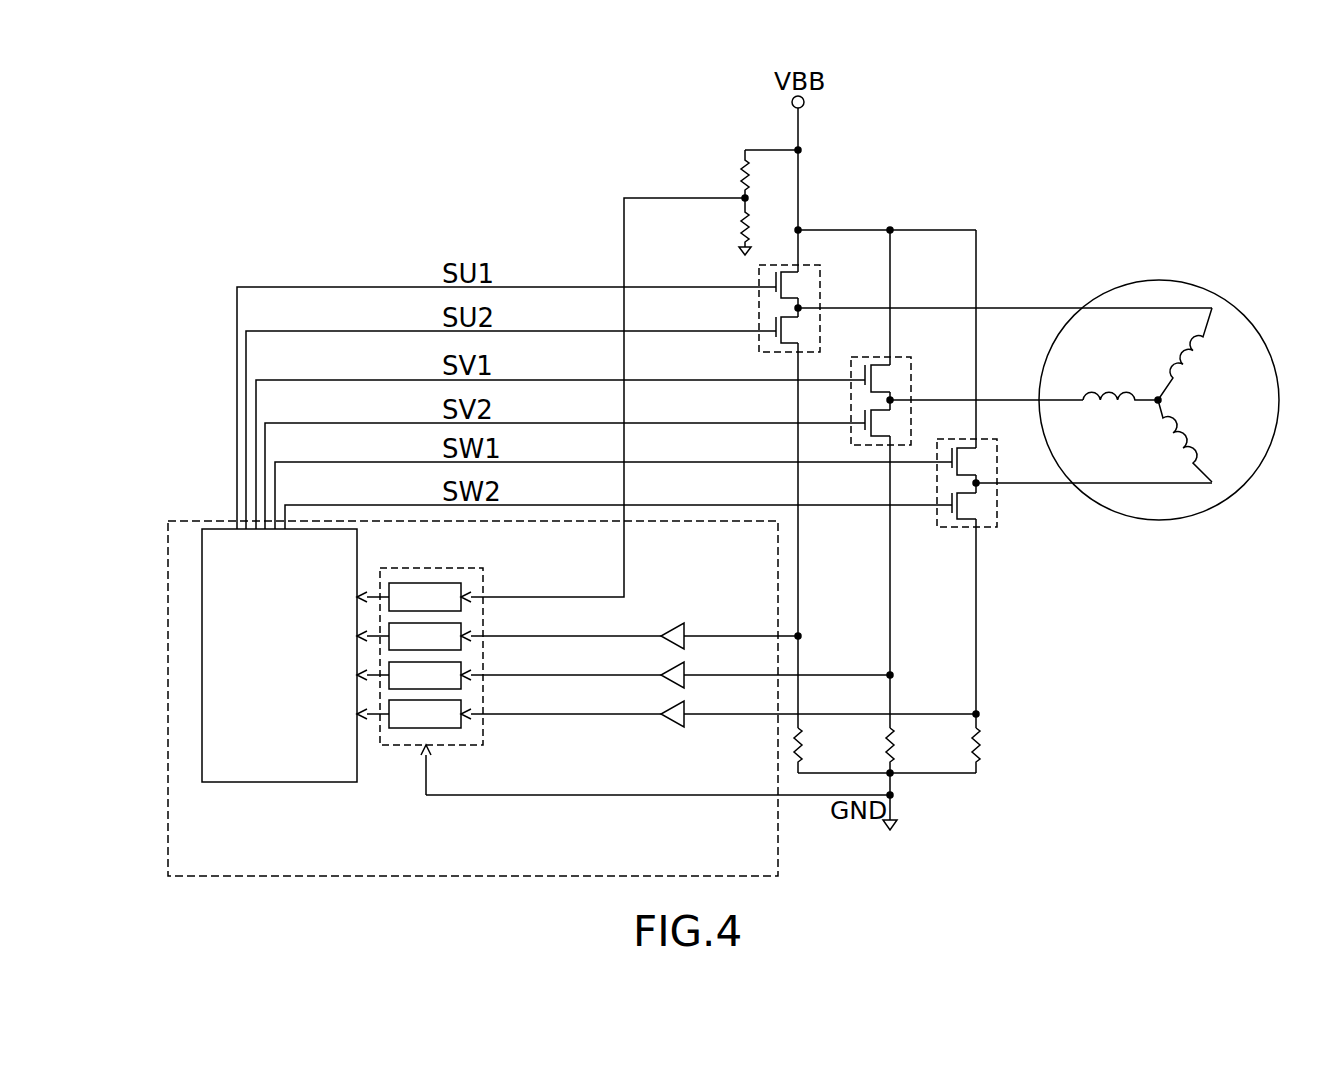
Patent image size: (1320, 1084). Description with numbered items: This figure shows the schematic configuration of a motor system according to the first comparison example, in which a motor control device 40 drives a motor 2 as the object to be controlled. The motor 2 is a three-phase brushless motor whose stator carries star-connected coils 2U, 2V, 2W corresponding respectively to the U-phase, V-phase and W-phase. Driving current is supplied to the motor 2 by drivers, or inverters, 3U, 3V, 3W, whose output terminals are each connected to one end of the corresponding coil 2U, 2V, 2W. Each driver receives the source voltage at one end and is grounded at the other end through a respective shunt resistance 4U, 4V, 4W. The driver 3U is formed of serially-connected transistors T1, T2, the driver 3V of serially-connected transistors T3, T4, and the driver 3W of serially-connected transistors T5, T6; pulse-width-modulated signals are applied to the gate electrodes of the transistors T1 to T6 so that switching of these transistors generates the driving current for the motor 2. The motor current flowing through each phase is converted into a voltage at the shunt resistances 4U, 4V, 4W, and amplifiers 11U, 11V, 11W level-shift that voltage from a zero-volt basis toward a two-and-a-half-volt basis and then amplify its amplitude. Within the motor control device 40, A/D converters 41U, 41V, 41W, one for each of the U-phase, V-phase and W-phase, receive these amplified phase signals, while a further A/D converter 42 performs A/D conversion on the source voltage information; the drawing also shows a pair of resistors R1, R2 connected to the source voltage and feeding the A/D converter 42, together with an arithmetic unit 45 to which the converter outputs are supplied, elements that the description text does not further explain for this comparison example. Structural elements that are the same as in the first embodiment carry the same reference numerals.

The motor 2 is at (1159, 379).
The coil 2U is at (1199, 354).
The coil 2V is at (1120, 376).
The coil 2W is at (1167, 441).
The driver 3U is at (793, 305).
The driver 3V is at (908, 381).
The driver 3W is at (994, 516).
The transistor T1 is at (775, 295).
The transistor T2 is at (775, 338).
The transistor T3 is at (888, 379).
The transistor T4 is at (888, 425).
The transistor T5 is at (975, 462).
The transistor T6 is at (1001, 503).
The resistor R1 is at (767, 174).
The resistor R2 is at (766, 226).
The shunt resistance 4U is at (821, 750).
The shunt resistance 4V is at (912, 750).
The shunt resistance 4W is at (1002, 750).
The amplifier 11U is at (686, 626).
The amplifier 11V is at (685, 682).
The amplifier 11W is at (665, 716).
The motor control device 40 is at (510, 704).
The A/D converter 41U is at (465, 645).
The A/D converter 41V is at (465, 684).
The A/D converter 41W is at (465, 724).
The A/D converter 42 is at (459, 644).
The arithmetic unit 45 is at (268, 782).